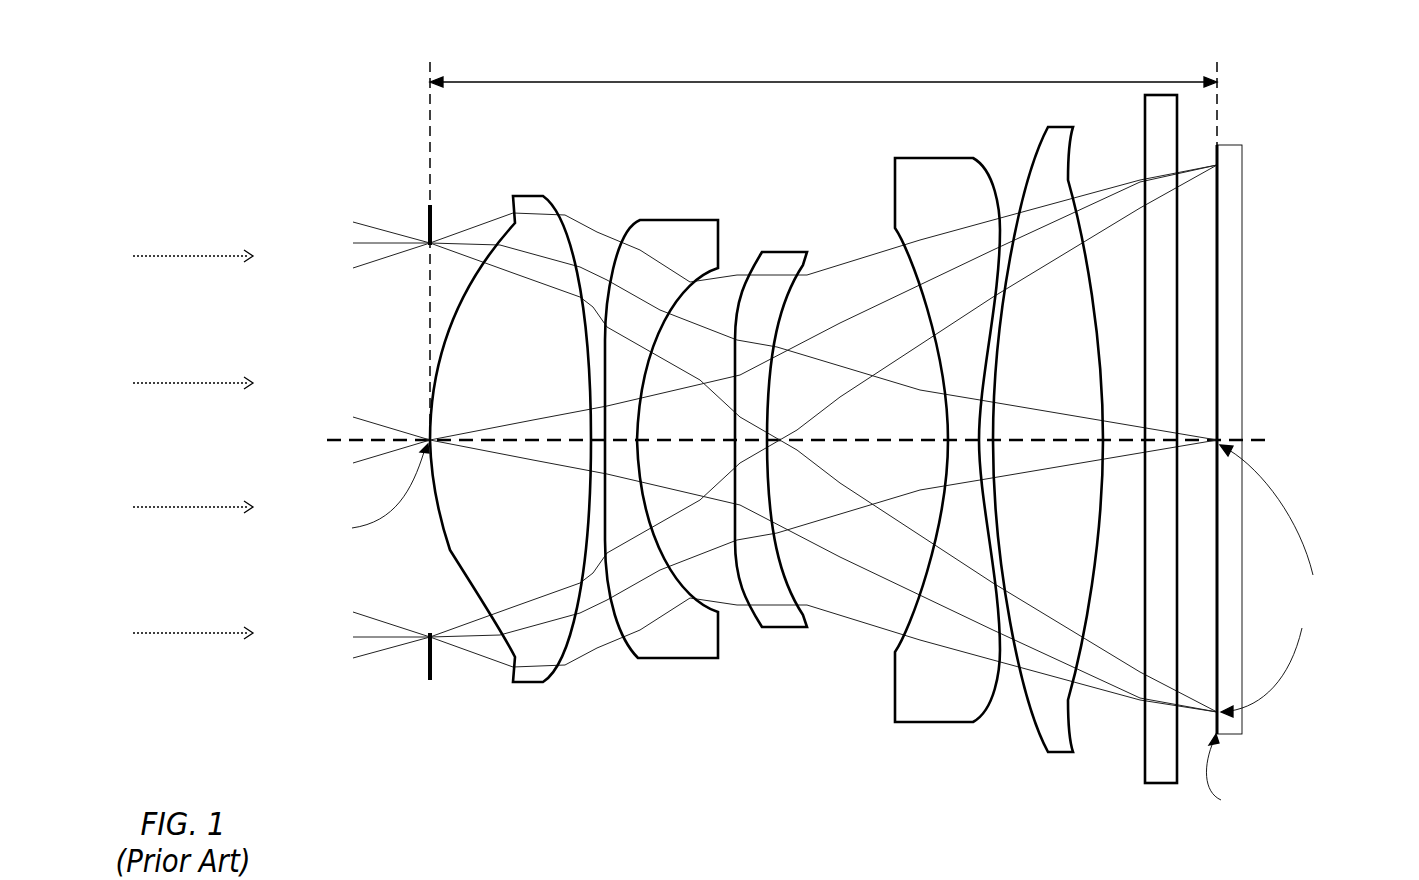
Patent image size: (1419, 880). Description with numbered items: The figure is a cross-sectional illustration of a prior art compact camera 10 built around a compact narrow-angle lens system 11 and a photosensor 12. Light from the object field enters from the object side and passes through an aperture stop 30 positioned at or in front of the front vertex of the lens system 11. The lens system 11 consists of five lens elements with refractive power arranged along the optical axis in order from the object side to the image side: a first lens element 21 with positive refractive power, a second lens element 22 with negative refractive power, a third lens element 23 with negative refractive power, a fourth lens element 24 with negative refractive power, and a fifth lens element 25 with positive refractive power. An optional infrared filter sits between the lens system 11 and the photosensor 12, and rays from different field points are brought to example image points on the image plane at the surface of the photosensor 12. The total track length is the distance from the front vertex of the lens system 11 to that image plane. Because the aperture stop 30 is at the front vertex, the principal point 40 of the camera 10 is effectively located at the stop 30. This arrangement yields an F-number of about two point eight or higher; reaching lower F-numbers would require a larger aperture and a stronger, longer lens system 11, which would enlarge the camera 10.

The camera 10 is at (760, 454).
The lens system 11 is at (771, 492).
The photosensor 12 is at (1284, 439).
The first lens element 21 is at (510, 462).
The second lens element 22 is at (661, 462).
The third lens element 23 is at (787, 461).
The fourth lens element 24 is at (943, 464).
The fifth lens element 25 is at (1052, 460).
The aperture stop 30 is at (420, 456).
The principal point 40 is at (424, 251).